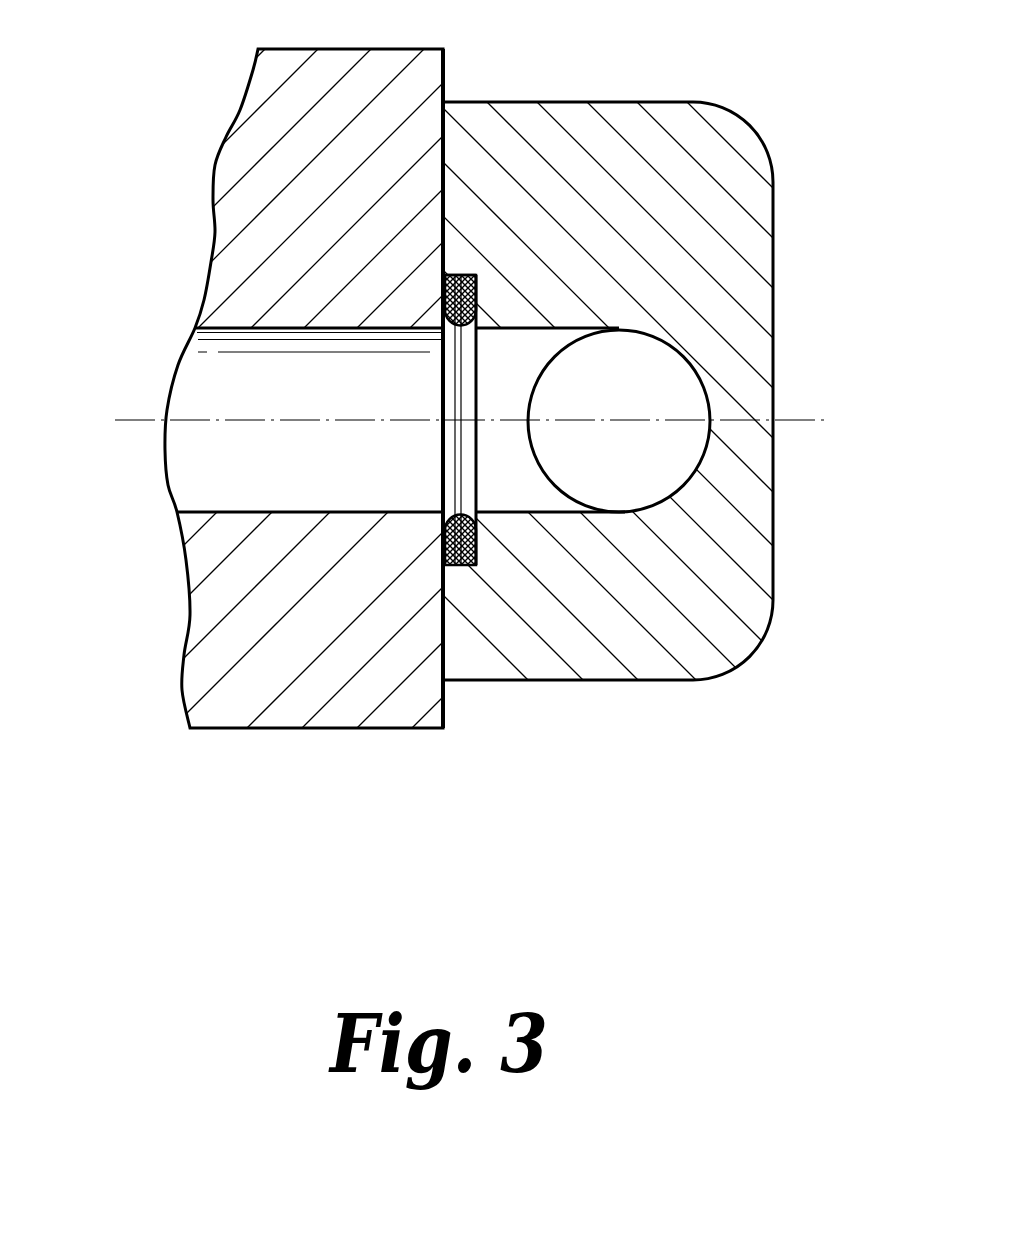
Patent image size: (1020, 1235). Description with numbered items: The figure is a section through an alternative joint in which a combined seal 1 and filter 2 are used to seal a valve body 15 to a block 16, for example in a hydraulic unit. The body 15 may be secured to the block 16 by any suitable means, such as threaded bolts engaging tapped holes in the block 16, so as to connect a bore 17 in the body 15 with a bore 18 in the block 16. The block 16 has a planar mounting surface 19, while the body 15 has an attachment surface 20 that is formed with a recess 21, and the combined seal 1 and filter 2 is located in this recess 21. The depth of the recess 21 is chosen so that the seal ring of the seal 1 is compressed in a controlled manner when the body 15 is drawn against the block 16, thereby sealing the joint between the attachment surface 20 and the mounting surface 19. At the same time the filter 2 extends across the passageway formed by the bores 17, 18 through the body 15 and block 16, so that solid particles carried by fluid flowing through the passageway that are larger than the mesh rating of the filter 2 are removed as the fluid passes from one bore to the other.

The seal 1 is at (443, 300).
The filter 2 is at (443, 493).
The valve body 15 is at (743, 596).
The block 16 is at (233, 652).
The bore 17 is at (687, 402).
The bore 18 is at (198, 390).
The planar mounting surface 19 is at (446, 699).
The attachment surface 20 is at (446, 135).
The recess 21 is at (466, 277).